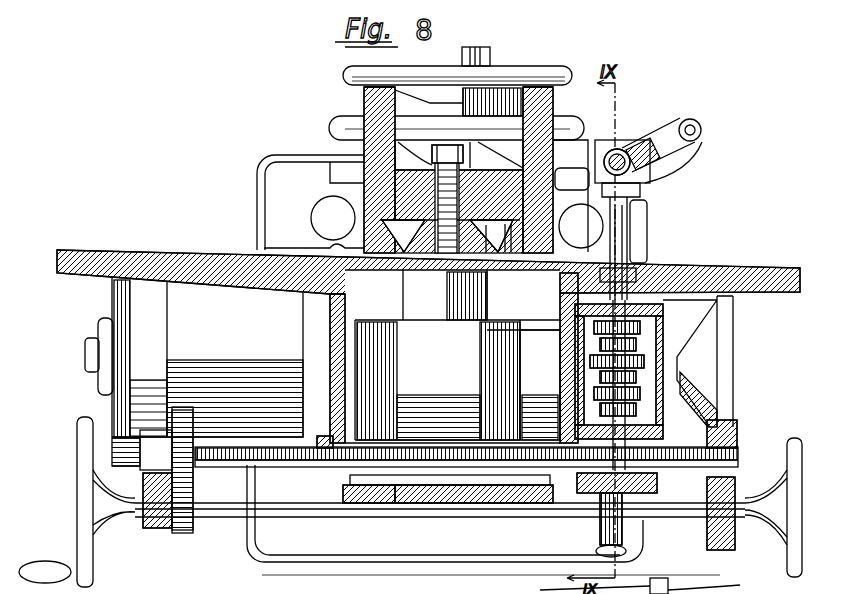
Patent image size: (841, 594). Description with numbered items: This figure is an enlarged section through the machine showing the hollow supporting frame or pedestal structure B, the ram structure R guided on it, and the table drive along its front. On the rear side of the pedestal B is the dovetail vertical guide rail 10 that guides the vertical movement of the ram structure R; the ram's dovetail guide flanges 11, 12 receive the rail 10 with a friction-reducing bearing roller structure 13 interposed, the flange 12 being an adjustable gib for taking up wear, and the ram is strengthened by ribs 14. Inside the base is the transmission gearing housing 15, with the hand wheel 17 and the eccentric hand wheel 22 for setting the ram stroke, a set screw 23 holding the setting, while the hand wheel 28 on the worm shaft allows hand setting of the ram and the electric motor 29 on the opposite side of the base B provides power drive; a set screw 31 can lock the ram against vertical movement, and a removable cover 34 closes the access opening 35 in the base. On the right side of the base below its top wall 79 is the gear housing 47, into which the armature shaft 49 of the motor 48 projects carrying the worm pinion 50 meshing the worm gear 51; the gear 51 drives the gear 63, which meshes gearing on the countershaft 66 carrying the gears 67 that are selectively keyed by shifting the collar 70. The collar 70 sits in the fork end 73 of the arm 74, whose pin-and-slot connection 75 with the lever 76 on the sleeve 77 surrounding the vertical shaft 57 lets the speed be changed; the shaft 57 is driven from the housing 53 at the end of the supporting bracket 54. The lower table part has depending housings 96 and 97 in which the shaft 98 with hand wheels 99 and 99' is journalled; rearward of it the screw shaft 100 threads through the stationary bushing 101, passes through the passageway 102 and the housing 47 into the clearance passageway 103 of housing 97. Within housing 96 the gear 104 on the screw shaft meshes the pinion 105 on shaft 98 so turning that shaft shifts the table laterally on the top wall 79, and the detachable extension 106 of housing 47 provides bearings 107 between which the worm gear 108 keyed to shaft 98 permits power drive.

The dovetail vertical guide extension or rail 10 is at (408, 214).
The wedge 11 is at (386, 256).
The flange 12 is at (520, 258).
The bearing roller structure 13 is at (425, 258).
The ribs 14 is at (367, 103).
The transmission gearing housing 15 is at (440, 325).
The hand wheel 17 is at (345, 76).
The hand wheel 22 is at (336, 122).
The bolt 23 is at (490, 53).
The hand wheel 28 is at (725, 331).
The electric motor 29 is at (130, 300).
The set screw 31 is at (488, 258).
The removable cover 34 is at (495, 505).
The access opening 35 is at (395, 505).
The gear housing 47 is at (662, 338).
The motor 48 is at (475, 345).
The armature shaft 49 is at (580, 366).
The worm pinion 50 is at (655, 353).
The worm gear 51 is at (628, 396).
The housing 53 is at (590, 180).
The supporting bracket 54 is at (640, 250).
The vertical shaft 57 is at (672, 585).
The gear 63 is at (587, 419).
The countershaft 66 is at (610, 252).
The gears 67 is at (627, 332).
The collar 70 is at (608, 212).
The fork end 73 is at (630, 200).
The arm 74 is at (652, 184).
The pin-and-slot connection 75 is at (694, 127).
The lever 76 is at (660, 145).
The sleeve 77 is at (622, 150).
The top wall 79 is at (700, 275).
The housing 96 is at (160, 530).
The housing 97 is at (737, 440).
The shaft 98 is at (275, 516).
The hand wheel 99 is at (77, 502).
The hand wheel 99' is at (773, 490).
The screw shaft 100 is at (246, 468).
The bushing 101 is at (325, 435).
The passageway 102 is at (552, 448).
The clearance passageway 103 is at (737, 482).
The gear 104 is at (194, 478).
The pinion 105 is at (190, 530).
The detachable extension 106 is at (657, 492).
The bearings 107 is at (598, 540).
The worm gear 108 is at (600, 552).
The supporting frame or pedestal structure B is at (341, 345).
The ram structure R is at (555, 118).